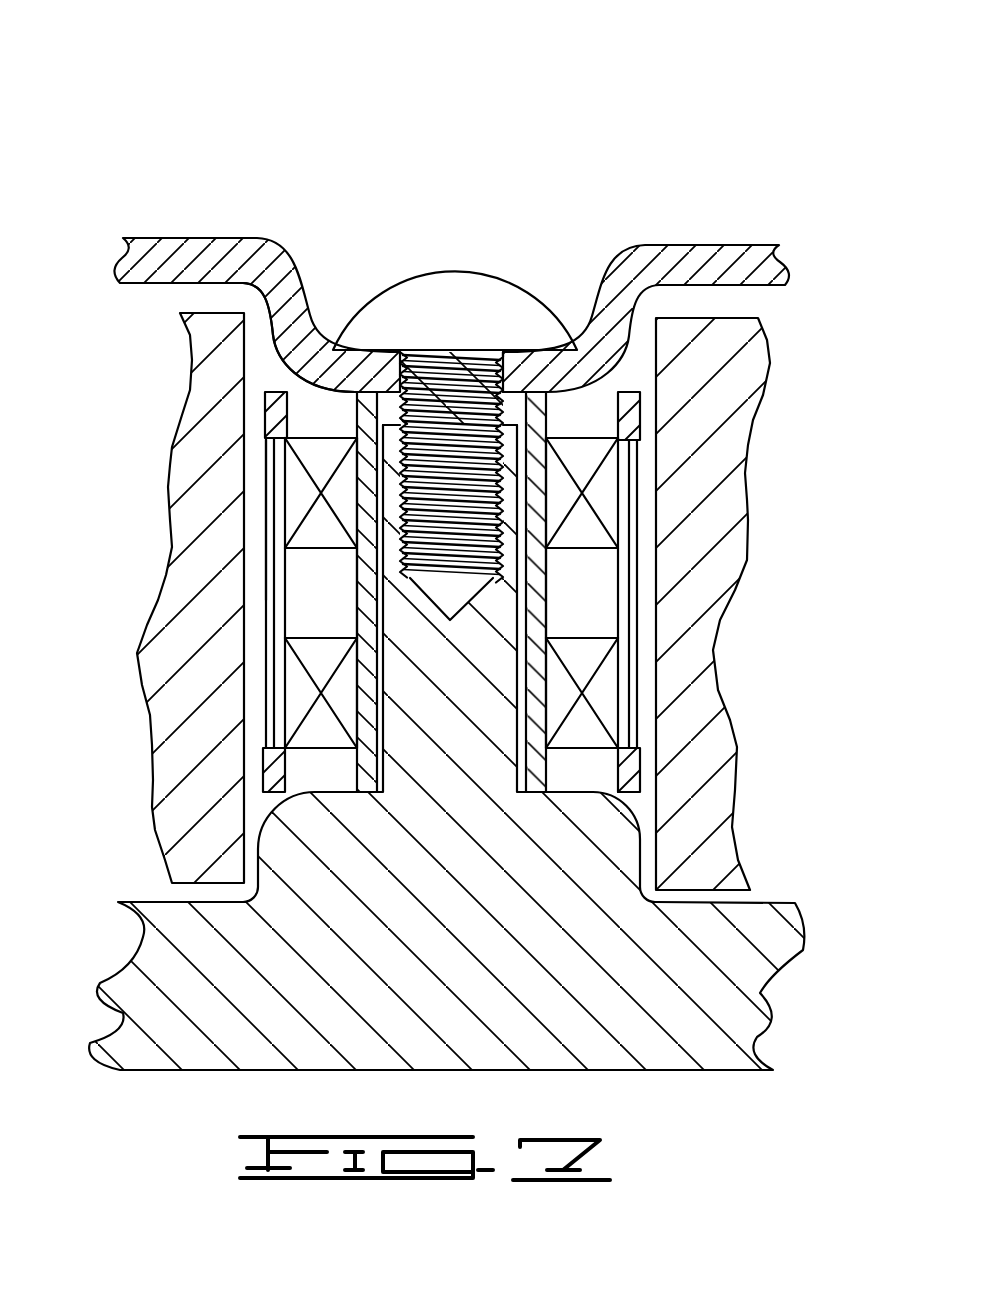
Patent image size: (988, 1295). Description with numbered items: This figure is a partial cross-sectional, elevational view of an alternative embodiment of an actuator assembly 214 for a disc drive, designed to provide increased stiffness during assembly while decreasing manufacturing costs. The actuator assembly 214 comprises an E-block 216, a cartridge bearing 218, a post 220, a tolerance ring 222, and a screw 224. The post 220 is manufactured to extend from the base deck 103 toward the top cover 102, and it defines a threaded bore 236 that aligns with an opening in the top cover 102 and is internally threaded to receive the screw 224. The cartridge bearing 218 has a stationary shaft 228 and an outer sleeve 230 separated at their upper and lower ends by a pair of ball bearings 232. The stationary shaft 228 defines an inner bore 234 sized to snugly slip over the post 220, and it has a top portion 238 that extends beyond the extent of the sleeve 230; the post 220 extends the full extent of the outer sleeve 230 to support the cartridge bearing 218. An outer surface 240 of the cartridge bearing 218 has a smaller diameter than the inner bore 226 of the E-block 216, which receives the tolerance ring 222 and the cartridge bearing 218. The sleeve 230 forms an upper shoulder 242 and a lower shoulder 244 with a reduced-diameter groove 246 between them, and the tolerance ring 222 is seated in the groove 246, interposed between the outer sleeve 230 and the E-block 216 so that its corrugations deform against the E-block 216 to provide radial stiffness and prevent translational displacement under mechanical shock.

The actuator assembly 214 is at (213, 100).
The top cover 102 is at (725, 268).
The base deck 103 is at (722, 983).
The E-block 216 is at (188, 837).
The cartridge bearing 218 is at (580, 415).
The post 220 is at (487, 760).
The tolerance ring 222 is at (645, 658).
The screw 224 is at (413, 303).
The inner bore 226 is at (302, 404).
The stationary shaft 228 is at (533, 503).
The outer sleeve 230 is at (632, 593).
The ball bearings 232 is at (300, 497).
The inner bore 234 is at (514, 401).
The threaded bore 236 is at (444, 401).
The top portion 238 is at (357, 420).
The outer surface 240 is at (268, 633).
The upper shoulder 242 is at (288, 394).
The lower shoulder 244 is at (258, 735).
The groove 246 is at (268, 590).